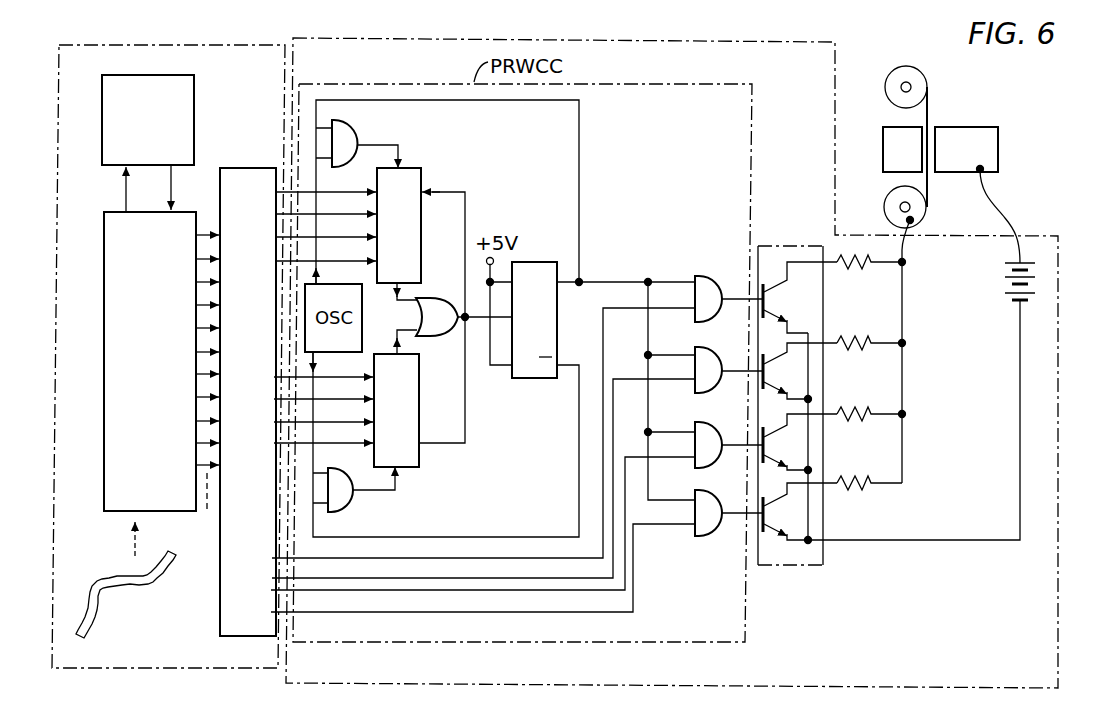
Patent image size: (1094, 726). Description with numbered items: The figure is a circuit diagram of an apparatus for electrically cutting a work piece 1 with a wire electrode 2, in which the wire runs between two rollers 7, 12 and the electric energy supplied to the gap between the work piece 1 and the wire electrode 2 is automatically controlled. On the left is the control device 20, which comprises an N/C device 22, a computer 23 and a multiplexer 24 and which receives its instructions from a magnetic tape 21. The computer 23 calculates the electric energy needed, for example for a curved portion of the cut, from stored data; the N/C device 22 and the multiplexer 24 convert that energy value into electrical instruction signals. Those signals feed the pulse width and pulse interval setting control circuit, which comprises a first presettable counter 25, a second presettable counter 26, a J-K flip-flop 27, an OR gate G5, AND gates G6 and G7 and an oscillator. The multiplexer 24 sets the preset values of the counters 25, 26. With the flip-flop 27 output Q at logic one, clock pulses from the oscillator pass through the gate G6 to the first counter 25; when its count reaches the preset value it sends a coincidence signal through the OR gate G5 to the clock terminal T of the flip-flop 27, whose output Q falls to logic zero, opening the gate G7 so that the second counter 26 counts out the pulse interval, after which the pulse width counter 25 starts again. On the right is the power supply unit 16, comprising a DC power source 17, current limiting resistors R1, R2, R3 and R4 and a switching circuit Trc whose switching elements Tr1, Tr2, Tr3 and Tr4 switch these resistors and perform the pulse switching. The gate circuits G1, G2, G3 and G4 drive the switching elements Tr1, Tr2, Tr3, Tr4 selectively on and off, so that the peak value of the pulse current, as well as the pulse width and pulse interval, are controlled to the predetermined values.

The work piece 1 is at (884, 146).
The wire electrode 2 is at (930, 107).
The supply roller 7 is at (922, 78).
The take-up roller 12 is at (885, 207).
The power supply unit 16 is at (592, 41).
The DC power source 17 is at (1000, 282).
The control device 20 is at (185, 45).
The magnetic tape 21 is at (157, 580).
The N/C device 22 is at (102, 277).
The computer 23 is at (196, 86).
The multiplexer 24 is at (243, 168).
The first presettable counter 25 is at (414, 168).
The second presettable counter 26 is at (417, 469).
The J-K flip-flop 27 is at (558, 322).
The gate circuit G1 is at (708, 278).
The gate circuit G2 is at (708, 354).
The gate circuit G3 is at (712, 433).
The gate circuit G4 is at (708, 510).
The OR gate G5 is at (440, 305).
The AND gate G6 is at (352, 137).
The AND gate G7 is at (354, 504).
The switching element Tr1 is at (800, 297).
The switching element Tr2 is at (800, 371).
The switching element Tr3 is at (800, 442).
The switching element Tr4 is at (800, 511).
The switching circuit Trc is at (758, 246).
The current limiting resistor R1 is at (869, 277).
The current limiting resistor R2 is at (869, 357).
The current limiting resistor R3 is at (869, 428).
The current limiting resistor R4 is at (869, 499).